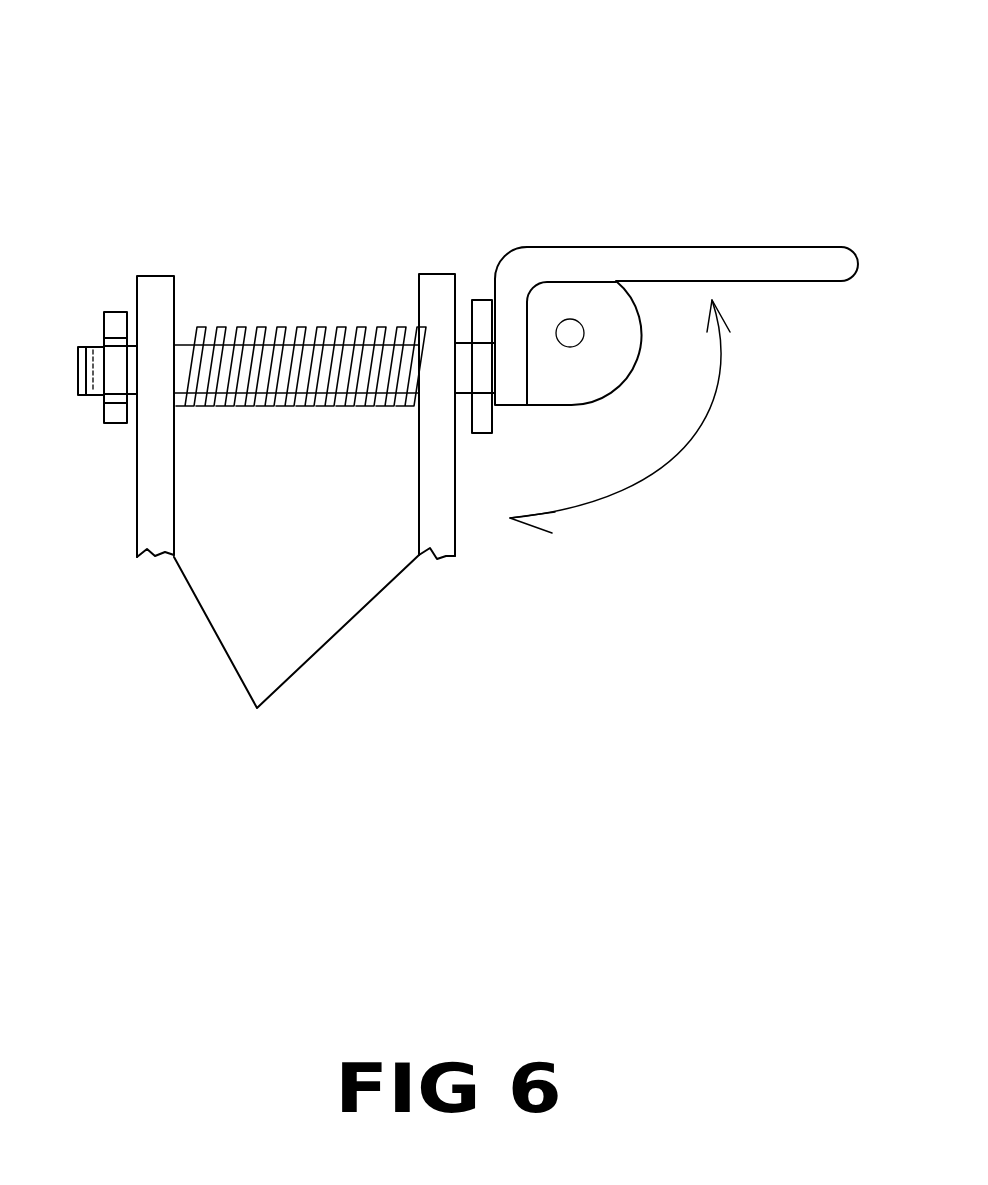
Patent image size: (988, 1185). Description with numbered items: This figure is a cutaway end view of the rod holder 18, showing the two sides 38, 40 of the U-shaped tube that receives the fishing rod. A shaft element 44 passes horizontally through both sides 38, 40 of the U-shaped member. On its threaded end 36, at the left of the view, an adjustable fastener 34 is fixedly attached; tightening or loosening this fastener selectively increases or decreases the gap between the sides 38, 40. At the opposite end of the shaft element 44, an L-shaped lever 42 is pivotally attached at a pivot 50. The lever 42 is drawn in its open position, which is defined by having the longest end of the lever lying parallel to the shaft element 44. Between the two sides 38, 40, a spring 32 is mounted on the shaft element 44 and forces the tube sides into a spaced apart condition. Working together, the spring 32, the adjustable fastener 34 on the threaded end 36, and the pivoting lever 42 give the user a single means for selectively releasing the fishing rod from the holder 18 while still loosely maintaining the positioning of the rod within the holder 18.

The rod holder 18 is at (296, 657).
The spring 32 is at (232, 322).
The adjustable fastener 34 is at (117, 312).
The threaded end 36 is at (87, 370).
The side of the U-shaped tube 38 is at (175, 498).
The side of the U-shaped tube 40 is at (419, 498).
The L-shaped lever 42 is at (688, 248).
The shaft element 44 is at (328, 270).
The pivot 50 is at (570, 335).